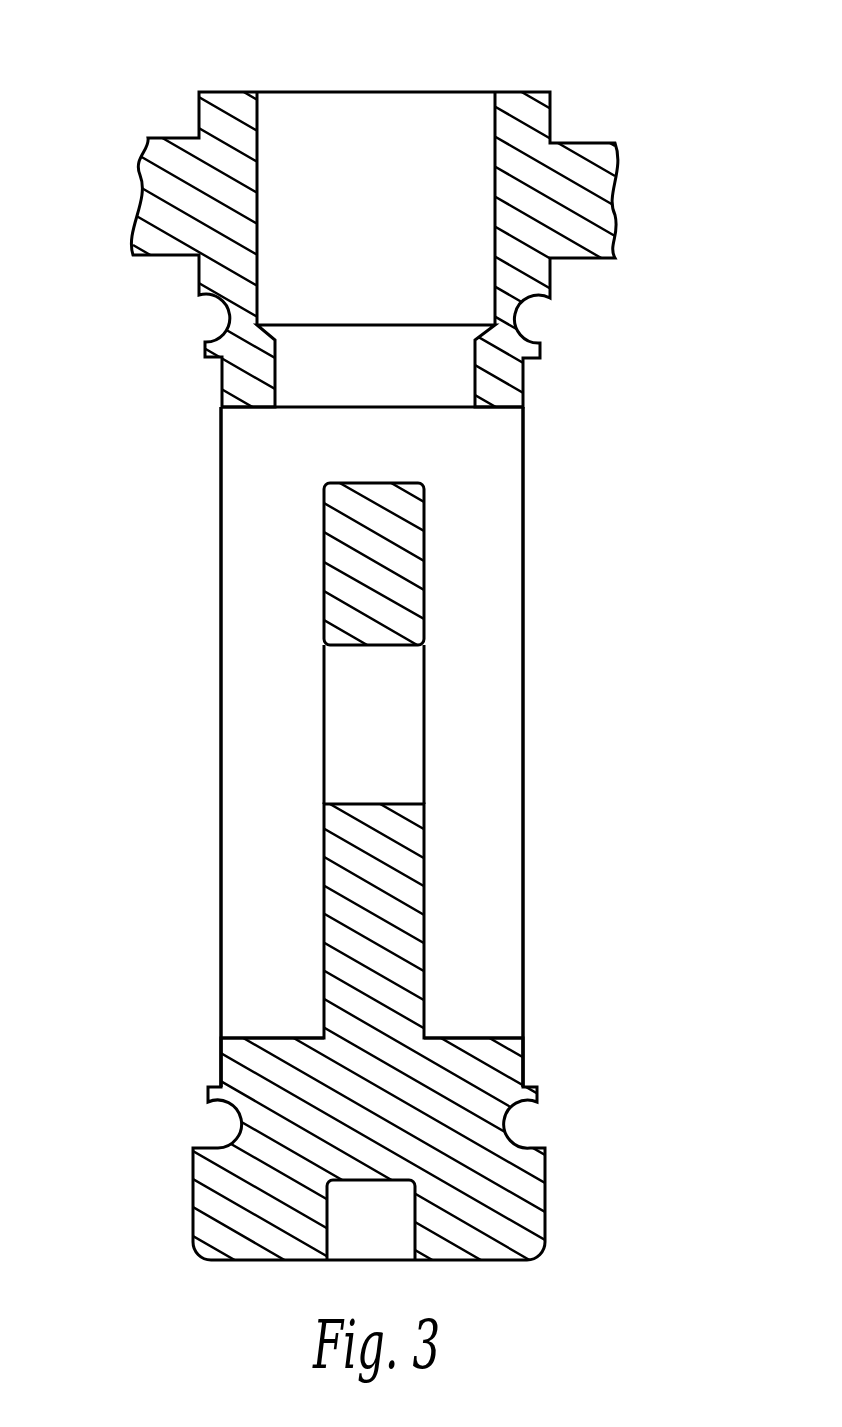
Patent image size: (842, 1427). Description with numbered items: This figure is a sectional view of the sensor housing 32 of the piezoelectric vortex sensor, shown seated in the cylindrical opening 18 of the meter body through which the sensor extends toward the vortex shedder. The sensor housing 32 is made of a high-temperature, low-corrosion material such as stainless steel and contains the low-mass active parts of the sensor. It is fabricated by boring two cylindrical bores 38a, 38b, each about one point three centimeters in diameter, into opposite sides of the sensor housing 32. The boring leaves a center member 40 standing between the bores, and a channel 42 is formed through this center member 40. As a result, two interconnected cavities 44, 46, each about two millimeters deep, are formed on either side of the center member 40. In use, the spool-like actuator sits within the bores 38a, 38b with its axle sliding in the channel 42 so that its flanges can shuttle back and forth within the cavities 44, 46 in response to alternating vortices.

The cylindrical opening 18 is at (415, 82).
The sensor housing 32 is at (588, 455).
The cylindrical bore 38a is at (193, 717).
The cylindrical bore 38b is at (570, 712).
The center member 40 is at (408, 898).
The channel 42 is at (357, 733).
The cavity 44 is at (288, 957).
The cavity 46 is at (487, 957).